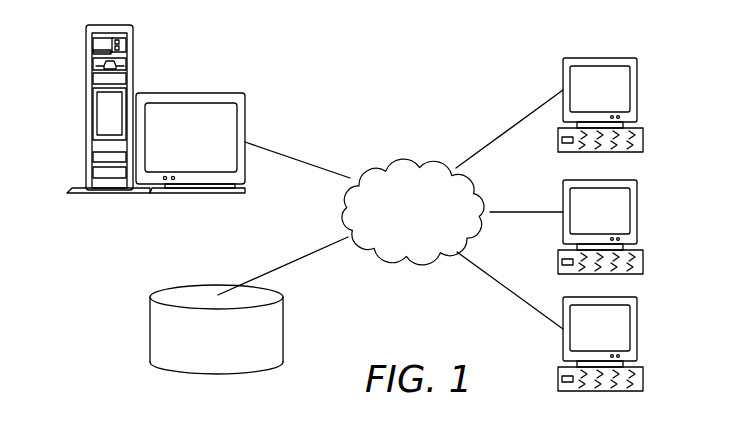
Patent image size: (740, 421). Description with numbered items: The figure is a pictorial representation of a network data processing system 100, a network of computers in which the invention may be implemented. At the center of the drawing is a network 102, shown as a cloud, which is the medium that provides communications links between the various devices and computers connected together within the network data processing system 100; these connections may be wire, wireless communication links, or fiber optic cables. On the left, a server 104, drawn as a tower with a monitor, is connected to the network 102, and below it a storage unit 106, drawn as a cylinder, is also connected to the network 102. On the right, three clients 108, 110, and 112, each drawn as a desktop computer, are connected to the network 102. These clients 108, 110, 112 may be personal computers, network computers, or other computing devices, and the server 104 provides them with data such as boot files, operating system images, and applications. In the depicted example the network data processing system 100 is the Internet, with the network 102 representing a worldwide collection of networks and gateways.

The network data processing system 100 is at (468, 79).
The network 102 is at (385, 160).
The server 104 is at (86, 110).
The storage unit 106 is at (150, 329).
The client 108 is at (637, 92).
The client 110 is at (637, 214).
The client 112 is at (637, 331).